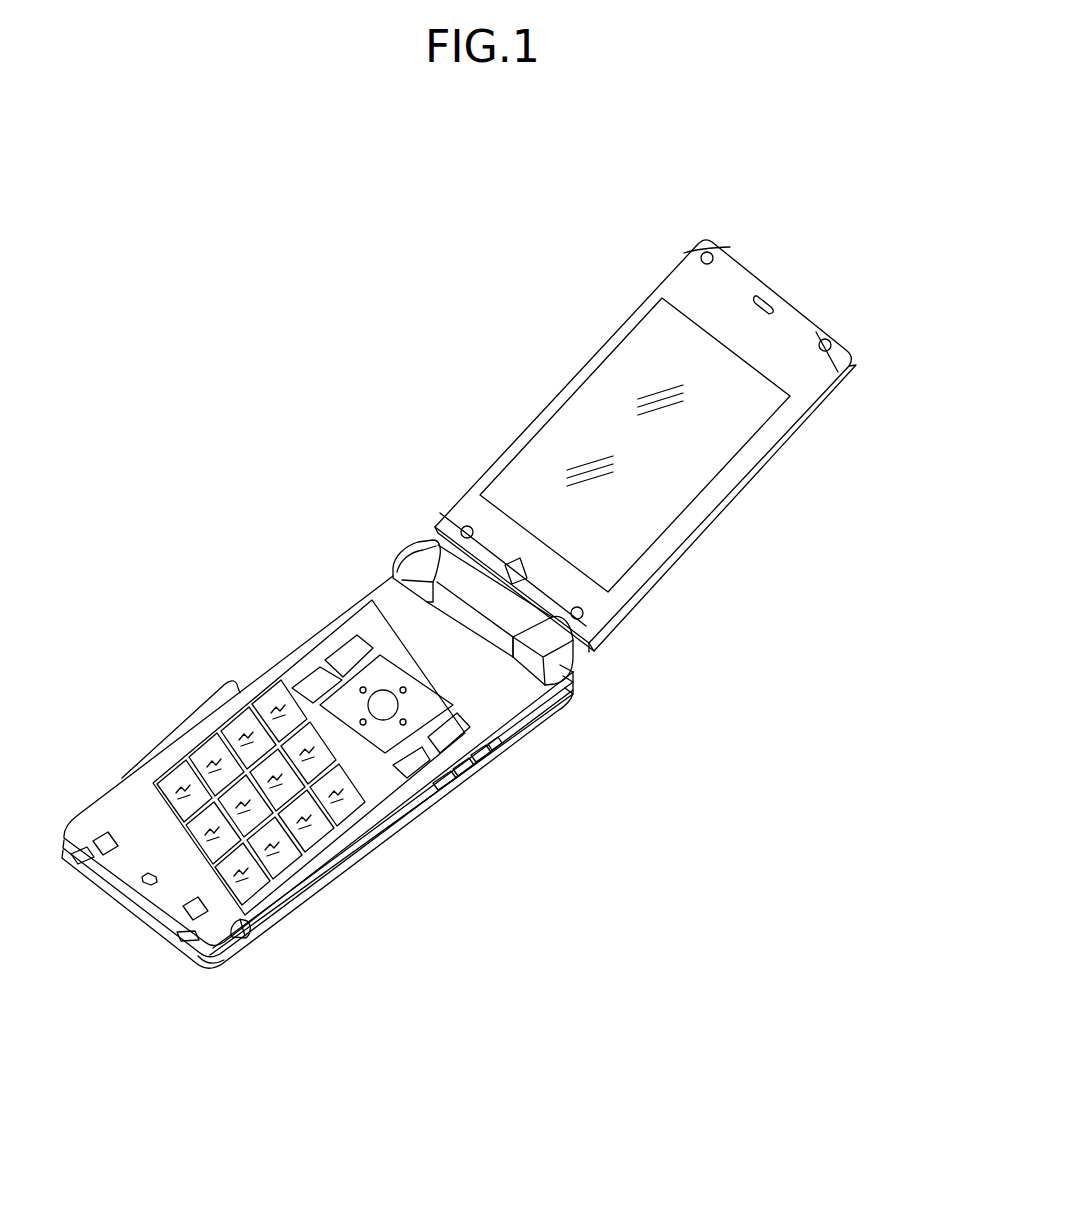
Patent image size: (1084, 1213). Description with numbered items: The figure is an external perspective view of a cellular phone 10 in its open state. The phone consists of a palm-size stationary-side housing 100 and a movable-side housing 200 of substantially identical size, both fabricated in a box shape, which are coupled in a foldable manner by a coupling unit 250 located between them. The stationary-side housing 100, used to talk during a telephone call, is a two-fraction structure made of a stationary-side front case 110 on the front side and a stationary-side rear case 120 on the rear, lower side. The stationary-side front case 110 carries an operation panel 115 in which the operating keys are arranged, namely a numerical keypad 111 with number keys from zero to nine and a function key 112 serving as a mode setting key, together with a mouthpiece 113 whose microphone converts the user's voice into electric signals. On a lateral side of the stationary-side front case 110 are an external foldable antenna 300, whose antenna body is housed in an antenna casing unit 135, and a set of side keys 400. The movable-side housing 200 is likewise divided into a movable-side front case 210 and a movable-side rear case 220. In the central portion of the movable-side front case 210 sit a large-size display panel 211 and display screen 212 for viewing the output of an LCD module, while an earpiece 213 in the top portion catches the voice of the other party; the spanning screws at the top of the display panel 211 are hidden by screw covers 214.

The cellular phone 10 is at (711, 208).
The stationary-side housing 100 is at (406, 836).
The stationary-side front case 110 is at (303, 877).
The numerical keypad 111 is at (181, 704).
The function key 112 is at (510, 717).
The mouthpiece 113 is at (143, 883).
The operation panel 115 is at (263, 717).
The stationary-side rear case 120 is at (240, 949).
The antenna casing unit 135 is at (228, 958).
The movable-side housing 200 is at (590, 343).
The movable-side front case 210 is at (790, 437).
The display panel 211 is at (517, 440).
The display screen 212 is at (620, 547).
The earpiece 213 is at (768, 299).
The screw covers 214 is at (840, 332).
The movable-side rear case 220 is at (717, 520).
The coupling unit 250 is at (463, 577).
The antenna 300 is at (358, 843).
The side keys 400 is at (487, 770).